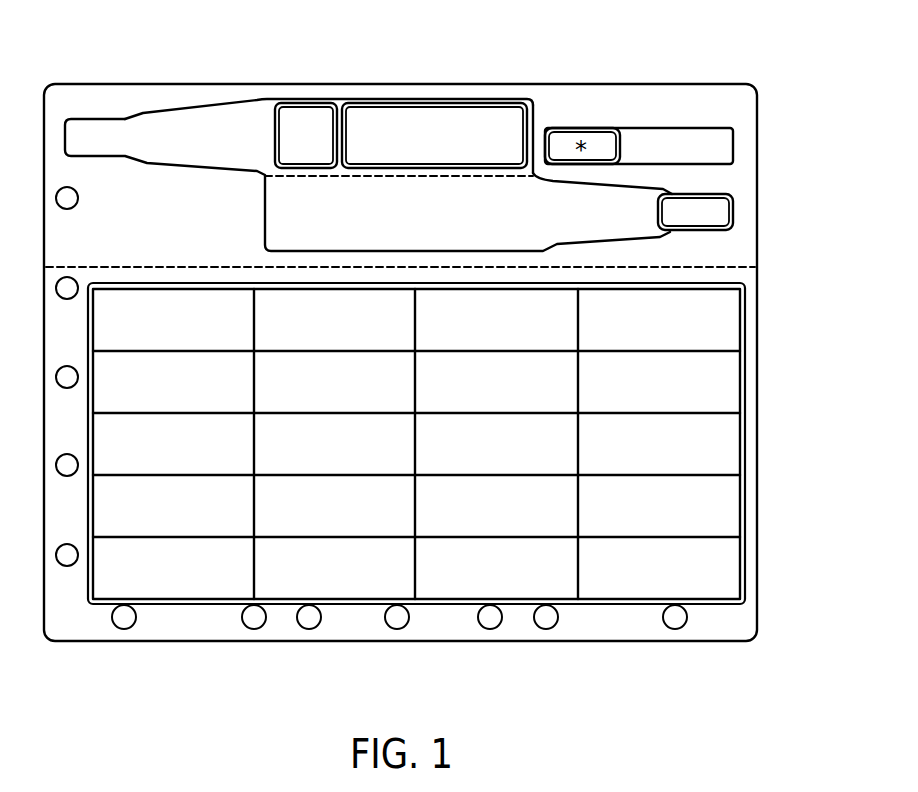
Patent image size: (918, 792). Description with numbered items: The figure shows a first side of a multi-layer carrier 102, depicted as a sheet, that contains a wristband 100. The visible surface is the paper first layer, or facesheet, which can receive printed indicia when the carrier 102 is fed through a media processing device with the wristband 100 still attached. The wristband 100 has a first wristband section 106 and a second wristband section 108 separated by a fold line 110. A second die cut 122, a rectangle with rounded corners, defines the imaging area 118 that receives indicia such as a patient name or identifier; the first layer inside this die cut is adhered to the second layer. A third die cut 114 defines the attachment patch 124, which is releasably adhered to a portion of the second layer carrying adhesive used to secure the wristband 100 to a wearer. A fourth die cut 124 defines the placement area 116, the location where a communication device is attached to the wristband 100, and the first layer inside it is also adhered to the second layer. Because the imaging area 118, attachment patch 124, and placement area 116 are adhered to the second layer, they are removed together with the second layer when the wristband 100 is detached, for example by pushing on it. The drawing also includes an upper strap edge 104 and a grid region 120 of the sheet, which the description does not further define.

The wristband 100 is at (200, 145).
The multi-layer carrier 102 is at (692, 84).
The upper strap edge 104 is at (210, 103).
The first wristband section 106 is at (243, 145).
The second wristband section 108 is at (457, 222).
The fold line 110 is at (337, 178).
The third die cut 114 is at (733, 210).
The placement area 116 is at (330, 149).
The imaging area 118 is at (459, 149).
The grid panel 120 is at (398, 449).
The second die cut 122 is at (440, 103).
The attachment patch 124 is at (312, 103).